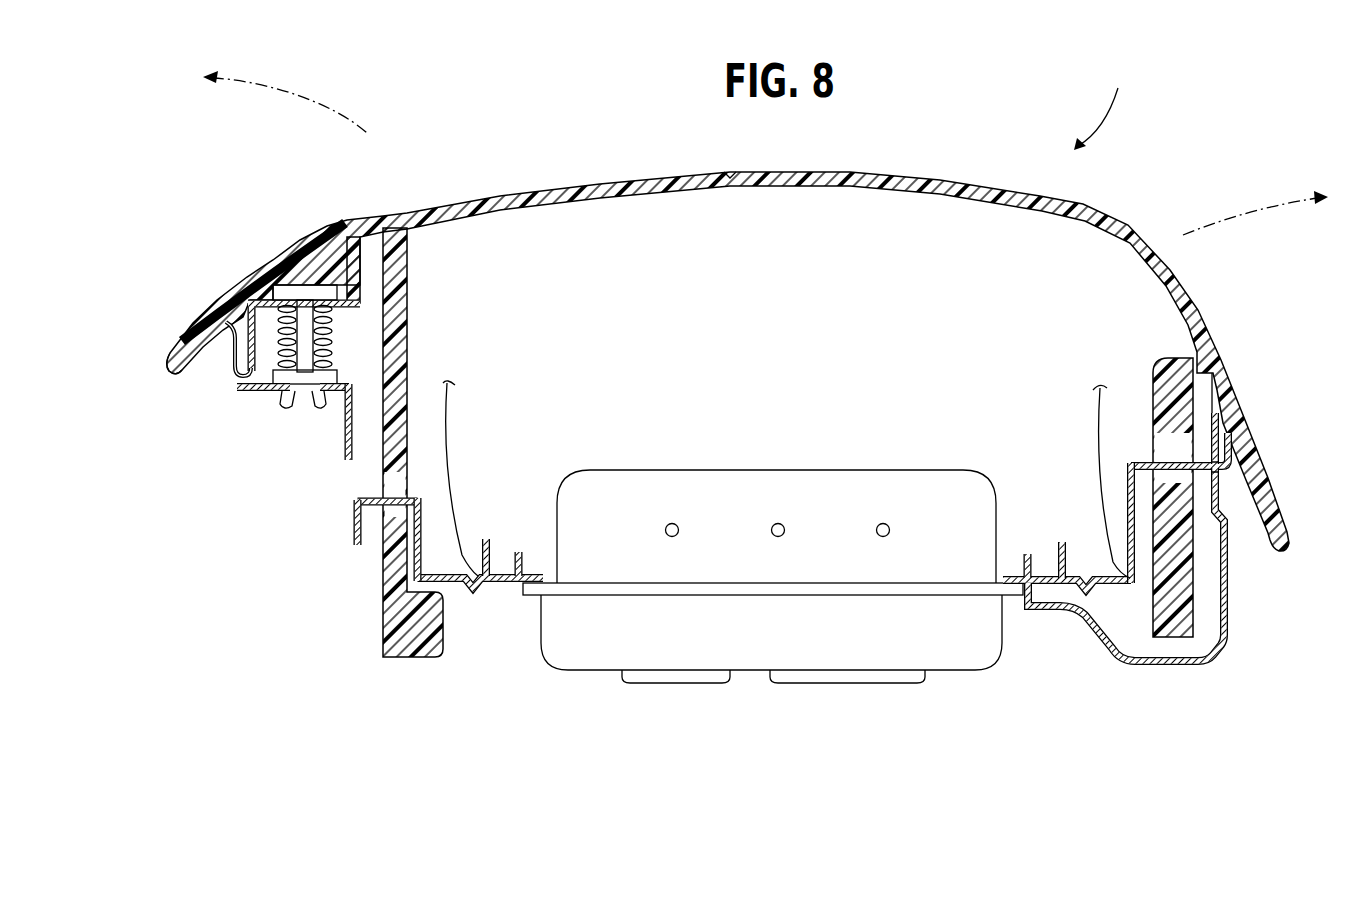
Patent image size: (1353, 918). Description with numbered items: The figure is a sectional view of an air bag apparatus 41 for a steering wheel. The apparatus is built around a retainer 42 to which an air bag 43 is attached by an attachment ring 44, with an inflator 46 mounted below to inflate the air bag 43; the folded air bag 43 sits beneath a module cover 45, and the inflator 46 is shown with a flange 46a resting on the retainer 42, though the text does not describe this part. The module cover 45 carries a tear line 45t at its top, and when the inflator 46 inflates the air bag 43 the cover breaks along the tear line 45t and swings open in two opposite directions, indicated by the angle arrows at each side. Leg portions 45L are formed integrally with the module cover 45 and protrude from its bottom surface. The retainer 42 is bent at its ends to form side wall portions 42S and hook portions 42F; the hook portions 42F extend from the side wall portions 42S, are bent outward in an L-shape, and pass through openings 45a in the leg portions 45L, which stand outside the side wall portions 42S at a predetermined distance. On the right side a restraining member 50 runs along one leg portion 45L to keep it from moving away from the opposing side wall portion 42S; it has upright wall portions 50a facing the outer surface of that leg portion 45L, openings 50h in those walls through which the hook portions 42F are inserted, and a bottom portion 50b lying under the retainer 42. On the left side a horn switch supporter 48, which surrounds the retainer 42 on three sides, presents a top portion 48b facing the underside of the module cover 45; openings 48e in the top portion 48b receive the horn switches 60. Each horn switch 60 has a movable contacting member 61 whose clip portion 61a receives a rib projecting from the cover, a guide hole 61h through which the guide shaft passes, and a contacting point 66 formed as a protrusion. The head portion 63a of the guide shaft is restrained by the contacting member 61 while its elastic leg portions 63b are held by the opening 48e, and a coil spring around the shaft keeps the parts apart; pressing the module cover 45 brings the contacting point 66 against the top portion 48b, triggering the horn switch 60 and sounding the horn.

The air bag apparatus 41 is at (1126, 84).
The retainer 42 is at (805, 555).
The side wall portions 42S is at (425, 527).
The hook portions 42F is at (354, 535).
The air bag 43 is at (455, 386).
The attachment ring 44 is at (490, 566).
The module cover 45 is at (701, 324).
The tear line 45t is at (730, 187).
The leg portions 45L is at (738, 442).
The openings 45a is at (390, 488).
The inflator 46 is at (757, 604).
The mounting plate 46a is at (540, 597).
The horn switch supporter 48 is at (247, 466).
The top portion 48b is at (240, 390).
The openings 48e is at (285, 402).
The restraining member 50 is at (1177, 615).
The upright wall portions 50a is at (1229, 600).
The bottom portion 50b is at (1150, 666).
The openings 50h is at (1221, 478).
The horn switch 60 is at (244, 360).
The movable terminal (contacting member) 61 is at (229, 298).
The clip portion 61a is at (167, 324).
The guide hole 61h is at (290, 298).
The head portion 63a is at (300, 285).
The elastic leg portions 63b is at (320, 405).
The contacting point 66 is at (238, 373).